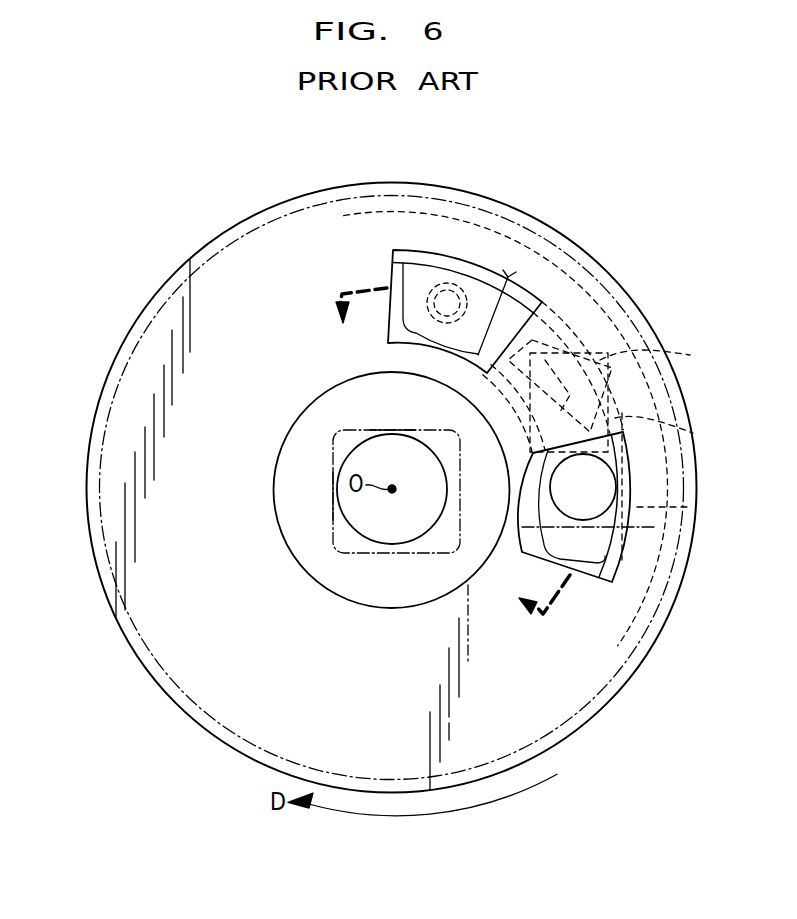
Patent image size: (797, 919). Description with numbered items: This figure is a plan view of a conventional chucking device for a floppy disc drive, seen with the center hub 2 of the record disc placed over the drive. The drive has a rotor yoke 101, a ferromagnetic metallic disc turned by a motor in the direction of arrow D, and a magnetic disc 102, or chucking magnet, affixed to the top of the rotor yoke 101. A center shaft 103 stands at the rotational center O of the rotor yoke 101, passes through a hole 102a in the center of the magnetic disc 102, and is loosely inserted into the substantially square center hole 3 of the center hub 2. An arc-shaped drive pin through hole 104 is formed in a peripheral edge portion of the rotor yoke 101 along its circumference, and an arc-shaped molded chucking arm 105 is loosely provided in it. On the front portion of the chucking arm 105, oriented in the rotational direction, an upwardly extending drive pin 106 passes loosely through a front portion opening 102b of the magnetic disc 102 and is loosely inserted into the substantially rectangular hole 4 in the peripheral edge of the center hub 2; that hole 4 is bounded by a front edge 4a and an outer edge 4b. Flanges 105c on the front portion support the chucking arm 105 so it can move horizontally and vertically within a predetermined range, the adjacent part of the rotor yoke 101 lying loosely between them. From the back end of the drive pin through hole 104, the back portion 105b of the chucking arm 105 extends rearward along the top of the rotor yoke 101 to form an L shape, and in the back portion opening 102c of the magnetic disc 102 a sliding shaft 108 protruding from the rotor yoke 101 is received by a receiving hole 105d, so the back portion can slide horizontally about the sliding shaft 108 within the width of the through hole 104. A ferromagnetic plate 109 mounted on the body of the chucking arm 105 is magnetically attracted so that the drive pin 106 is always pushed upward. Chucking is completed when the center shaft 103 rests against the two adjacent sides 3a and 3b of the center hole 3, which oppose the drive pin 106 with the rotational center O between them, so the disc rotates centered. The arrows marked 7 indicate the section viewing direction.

The center hub 2 is at (162, 307).
The rotor yoke 101 is at (128, 342).
The magnetic disc 102 is at (99, 400).
The hole 102a is at (300, 433).
The front portion opening 102b is at (612, 568).
The back portion opening 102c is at (388, 335).
The center shaft 103 is at (401, 525).
The drive pin through hole 104 is at (625, 300).
The chucking arm 105 is at (530, 302).
The back portion 105b is at (417, 282).
The flanges 105c is at (587, 553).
The receiving hole 105d is at (442, 278).
The drive pin 106 is at (583, 486).
The sliding shaft 108 is at (447, 303).
The ferromagnetic plate 109 is at (615, 388).
The center hole 3 is at (327, 535).
The side 3a is at (333, 498).
The side 3b is at (392, 430).
The hole 4 is at (568, 383).
The front edge 4a is at (660, 530).
The outer edge 4b is at (693, 433).
The section line arrow 7 is at (445, 466).